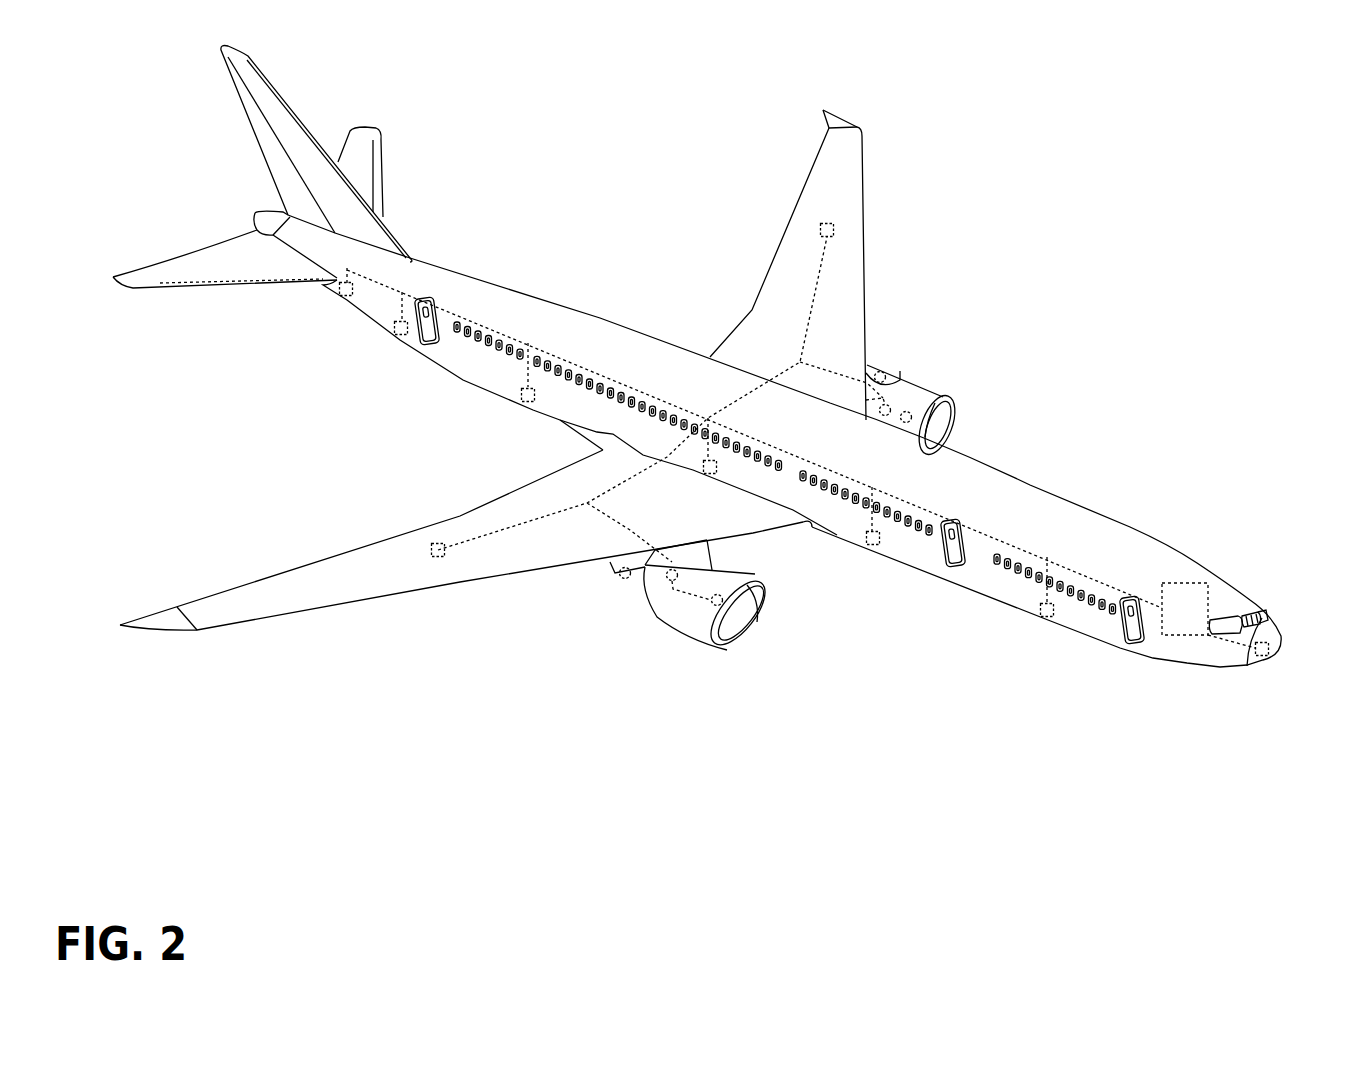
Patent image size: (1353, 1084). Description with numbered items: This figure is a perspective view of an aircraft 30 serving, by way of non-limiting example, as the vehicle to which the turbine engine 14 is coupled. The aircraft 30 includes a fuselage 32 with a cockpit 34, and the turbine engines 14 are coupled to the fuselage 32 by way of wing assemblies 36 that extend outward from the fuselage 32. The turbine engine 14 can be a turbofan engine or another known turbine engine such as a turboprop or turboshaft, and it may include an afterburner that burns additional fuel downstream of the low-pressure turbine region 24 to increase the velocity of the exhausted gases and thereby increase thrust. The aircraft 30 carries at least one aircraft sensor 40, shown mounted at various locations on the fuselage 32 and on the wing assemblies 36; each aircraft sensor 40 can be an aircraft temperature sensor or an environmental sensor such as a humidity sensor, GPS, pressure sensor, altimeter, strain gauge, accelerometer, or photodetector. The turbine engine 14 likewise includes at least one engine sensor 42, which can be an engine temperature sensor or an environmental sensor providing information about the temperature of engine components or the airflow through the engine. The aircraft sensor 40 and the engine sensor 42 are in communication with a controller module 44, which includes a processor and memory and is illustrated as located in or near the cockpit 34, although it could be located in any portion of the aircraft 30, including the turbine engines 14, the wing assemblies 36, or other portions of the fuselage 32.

The turbine engine 14 is at (910, 366).
The low-pressure turbine region 24 is at (595, 563).
The aircraft 30 is at (1046, 486).
The fuselage 32 is at (972, 477).
The cockpit 34 is at (1265, 615).
The wing assemblies 36 is at (800, 288).
The aircraft sensor 40 is at (833, 230).
The engine sensor 42 is at (880, 371).
The controller module 44 is at (1210, 583).